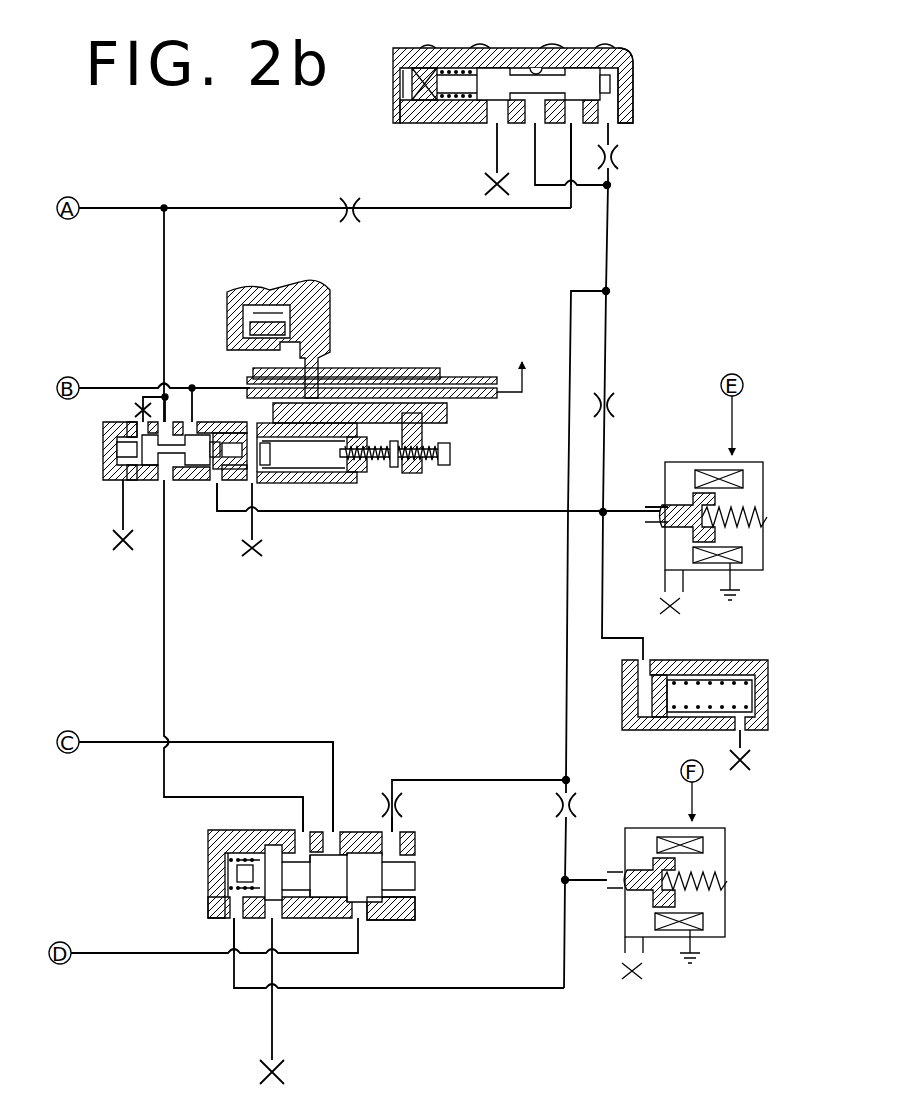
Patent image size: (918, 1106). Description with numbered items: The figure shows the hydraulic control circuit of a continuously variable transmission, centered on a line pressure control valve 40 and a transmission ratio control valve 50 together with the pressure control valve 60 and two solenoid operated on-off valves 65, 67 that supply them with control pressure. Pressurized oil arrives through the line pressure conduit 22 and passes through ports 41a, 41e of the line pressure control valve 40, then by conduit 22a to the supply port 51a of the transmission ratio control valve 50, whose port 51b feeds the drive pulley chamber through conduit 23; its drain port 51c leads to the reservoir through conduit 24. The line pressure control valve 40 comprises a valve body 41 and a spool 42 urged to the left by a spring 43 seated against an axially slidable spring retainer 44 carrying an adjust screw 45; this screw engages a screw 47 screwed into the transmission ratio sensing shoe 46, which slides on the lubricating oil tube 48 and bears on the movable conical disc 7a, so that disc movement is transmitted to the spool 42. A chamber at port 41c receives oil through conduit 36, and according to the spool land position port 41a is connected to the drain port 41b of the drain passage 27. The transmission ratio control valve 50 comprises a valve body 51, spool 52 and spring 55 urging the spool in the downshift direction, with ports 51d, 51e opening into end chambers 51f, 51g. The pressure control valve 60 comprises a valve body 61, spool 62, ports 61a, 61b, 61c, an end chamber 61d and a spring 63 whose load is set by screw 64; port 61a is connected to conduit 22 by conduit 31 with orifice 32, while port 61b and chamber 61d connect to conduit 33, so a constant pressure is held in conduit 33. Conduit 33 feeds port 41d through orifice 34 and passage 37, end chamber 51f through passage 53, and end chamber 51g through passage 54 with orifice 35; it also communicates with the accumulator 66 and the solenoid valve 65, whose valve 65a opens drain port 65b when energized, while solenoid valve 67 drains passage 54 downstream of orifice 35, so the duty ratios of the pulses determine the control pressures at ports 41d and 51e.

The movable conical disc 7a is at (326, 300).
The line pressure conduit 22 is at (140, 206).
The conduit 22a is at (182, 706).
The conduit 23 is at (132, 742).
The conduit 24 is at (150, 958).
The drain passage 27 is at (125, 388).
The conduit 31 is at (405, 212).
The orifice 32 is at (350, 222).
The conduit 33 is at (608, 236).
The orifice 34 is at (608, 403).
The orifice 35 is at (556, 805).
The conduit 36 is at (163, 384).
The passage 37 is at (458, 513).
The line pressure control valve 40 is at (152, 451).
The valve body 41 is at (106, 450).
The port 41a is at (170, 415).
The drain port 41b is at (195, 425).
The port 41c is at (136, 410).
The port 41d is at (220, 492).
The port 41e is at (156, 485).
The spool 42 is at (205, 482).
The spring 43 is at (272, 482).
The spring retainer 44 is at (343, 476).
The adjust screw 45 is at (386, 464).
The transmission ratio sensing shoe 46 is at (407, 370).
The screw 47 is at (452, 455).
The lubricating oil tube 48 is at (466, 387).
The transmission ratio control valve 50 is at (324, 913).
The valve body 51 is at (410, 916).
The pressure oil supply port 51a is at (294, 830).
The port 51b is at (338, 830).
The drain port 51c is at (347, 924).
The port 51d is at (408, 845).
The port 51e is at (226, 924).
The end chamber 51f is at (410, 906).
The end chamber 51g is at (225, 878).
The spool 52 is at (370, 918).
The passage 53 is at (450, 780).
The passage 54 is at (422, 990).
The spring 55 is at (222, 852).
The pressure control valve 60 is at (561, 63).
The valve body 61 is at (565, 68).
The port 61a is at (572, 130).
The port 61b is at (530, 130).
The port 61c is at (492, 112).
The end chamber 61d is at (632, 56).
The spool 62 is at (606, 80).
The spring 63 is at (455, 70).
The screw 64 is at (420, 68).
The solenoid operated on-off control valve 65 is at (689, 516).
The valve 65a is at (662, 526).
The drain port 65b is at (648, 507).
The accumulator 66 is at (750, 664).
The solenoid operated on-off control valve 67 is at (745, 937).